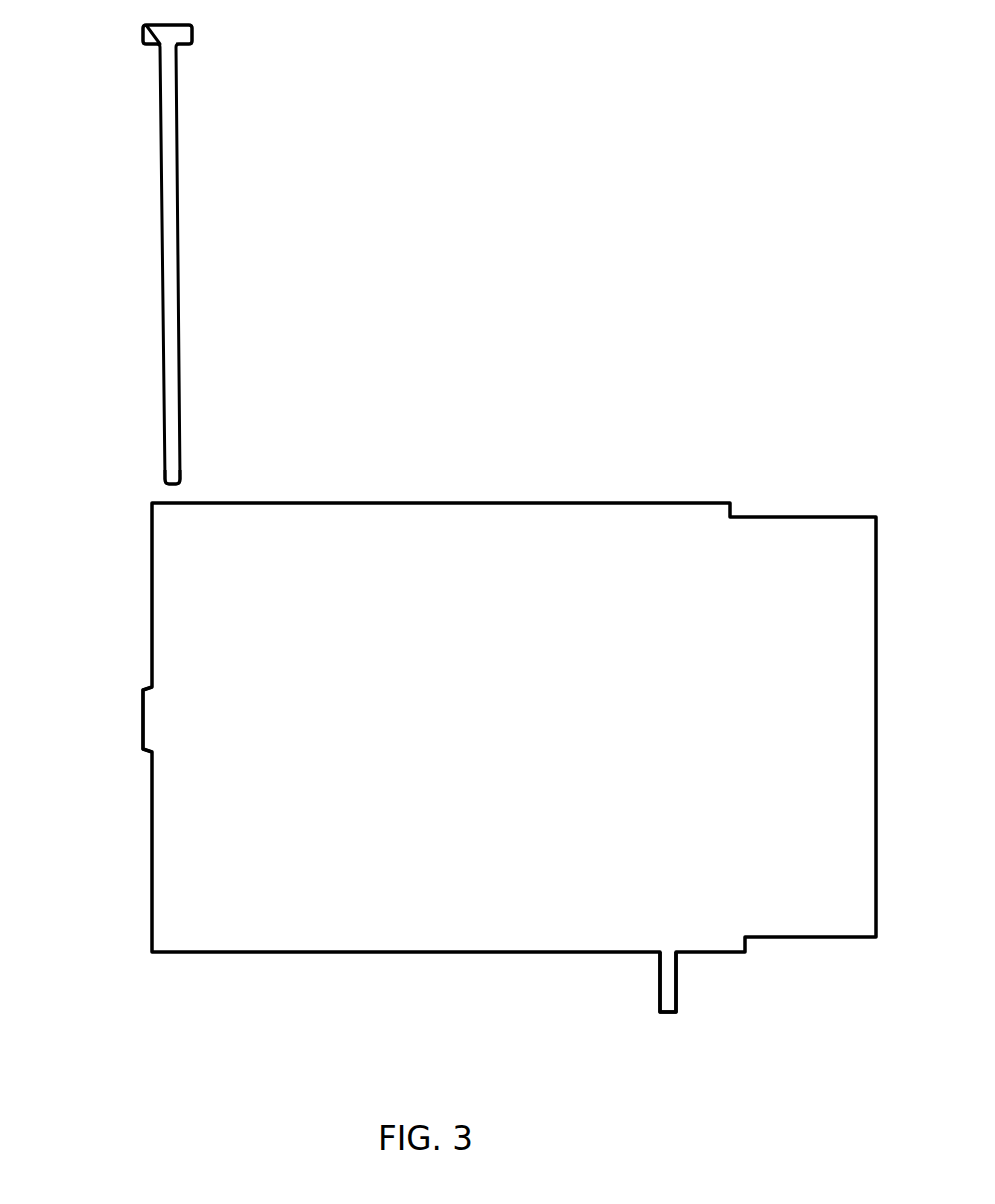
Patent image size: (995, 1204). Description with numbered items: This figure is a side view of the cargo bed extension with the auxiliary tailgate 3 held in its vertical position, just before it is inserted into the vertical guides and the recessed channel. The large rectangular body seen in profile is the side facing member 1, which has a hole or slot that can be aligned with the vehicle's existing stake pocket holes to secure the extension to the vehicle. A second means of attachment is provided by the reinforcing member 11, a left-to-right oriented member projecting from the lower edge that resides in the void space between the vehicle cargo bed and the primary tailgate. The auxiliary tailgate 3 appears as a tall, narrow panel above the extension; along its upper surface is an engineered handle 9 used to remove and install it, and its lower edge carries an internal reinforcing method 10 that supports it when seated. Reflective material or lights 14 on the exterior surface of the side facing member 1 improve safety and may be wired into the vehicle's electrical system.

The side facing member 1 is at (762, 505).
The auxiliary tailgate 3 is at (178, 215).
The engineered handle 9 is at (192, 33).
The internal reinforcing method 10 is at (168, 478).
The reinforcing member 11 is at (672, 998).
The reflective material or lights 14 is at (148, 718).